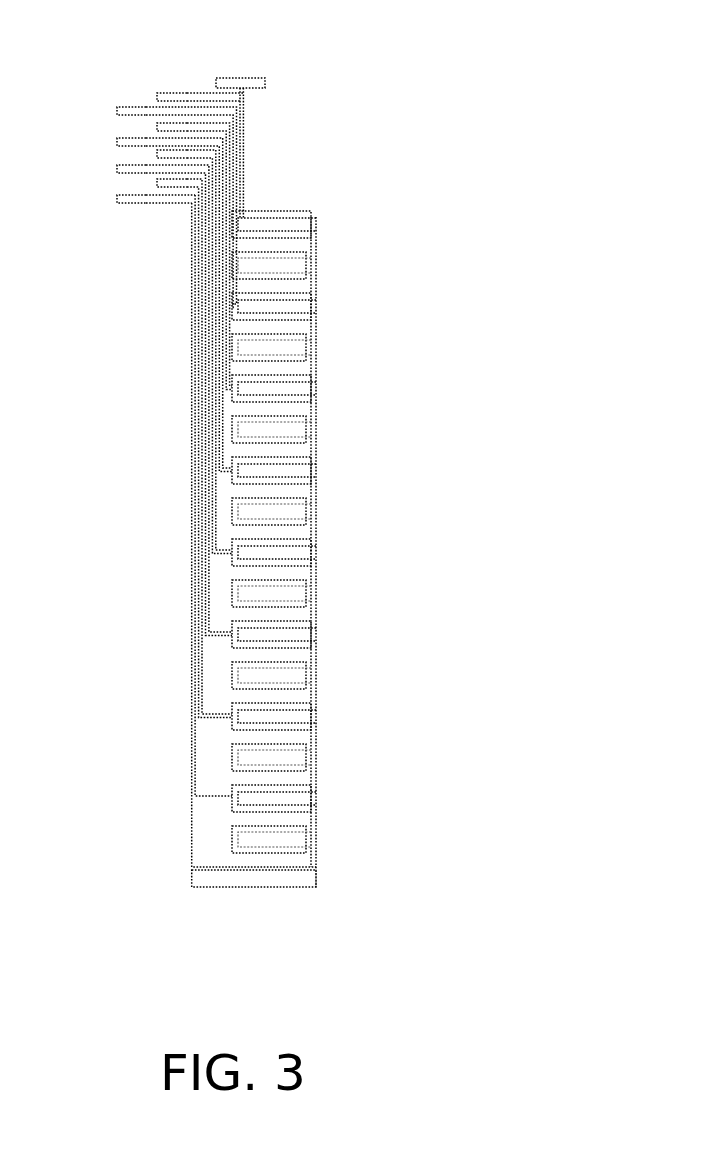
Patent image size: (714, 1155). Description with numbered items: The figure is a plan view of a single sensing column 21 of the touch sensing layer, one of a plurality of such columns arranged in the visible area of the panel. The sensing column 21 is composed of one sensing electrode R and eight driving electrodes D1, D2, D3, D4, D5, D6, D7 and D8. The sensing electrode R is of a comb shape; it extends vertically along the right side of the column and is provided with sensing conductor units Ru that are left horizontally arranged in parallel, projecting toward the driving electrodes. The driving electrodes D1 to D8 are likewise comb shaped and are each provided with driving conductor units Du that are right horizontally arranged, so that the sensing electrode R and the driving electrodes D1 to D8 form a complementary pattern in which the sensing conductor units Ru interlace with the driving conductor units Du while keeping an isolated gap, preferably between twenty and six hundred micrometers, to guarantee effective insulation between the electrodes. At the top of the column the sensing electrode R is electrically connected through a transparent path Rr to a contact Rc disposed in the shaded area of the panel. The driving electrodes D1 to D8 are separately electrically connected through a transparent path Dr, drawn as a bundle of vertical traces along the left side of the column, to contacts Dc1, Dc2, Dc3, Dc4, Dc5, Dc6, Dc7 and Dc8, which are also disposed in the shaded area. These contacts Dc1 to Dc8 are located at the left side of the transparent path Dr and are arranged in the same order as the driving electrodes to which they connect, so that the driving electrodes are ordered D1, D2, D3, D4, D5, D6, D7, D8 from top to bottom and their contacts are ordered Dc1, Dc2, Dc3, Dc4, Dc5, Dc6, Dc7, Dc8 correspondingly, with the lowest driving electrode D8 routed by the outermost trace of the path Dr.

The contact Rc is at (250, 78).
The transparent path Rr is at (245, 113).
The sensing electrode R is at (318, 406).
The sensing conductor units Ru is at (272, 268).
The driving conductor units Du is at (290, 246).
The transparent path Dr is at (189, 231).
The contact Dc1 is at (165, 92).
The contact Dc2 is at (129, 106).
The contact Dc3 is at (171, 124).
The contact Dc4 is at (120, 139).
The contact Dc5 is at (170, 152).
The contact Dc6 is at (120, 168).
The contact Dc7 is at (176, 184).
The contact Dc8 is at (120, 199).
The driving electrode D1 is at (226, 283).
The driving electrode D2 is at (226, 349).
The driving electrode D3 is at (224, 430).
The driving electrode D4 is at (220, 505).
The driving electrode D5 is at (215, 587).
The driving electrode D6 is at (213, 665).
The driving electrode D7 is at (210, 741).
The driving electrode D8 is at (205, 827).
The sensing column 21 is at (320, 470).